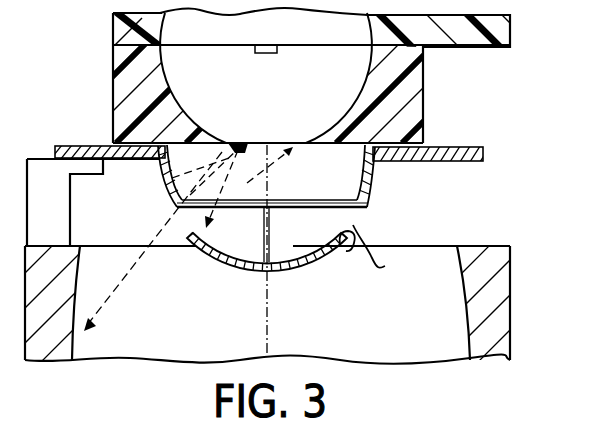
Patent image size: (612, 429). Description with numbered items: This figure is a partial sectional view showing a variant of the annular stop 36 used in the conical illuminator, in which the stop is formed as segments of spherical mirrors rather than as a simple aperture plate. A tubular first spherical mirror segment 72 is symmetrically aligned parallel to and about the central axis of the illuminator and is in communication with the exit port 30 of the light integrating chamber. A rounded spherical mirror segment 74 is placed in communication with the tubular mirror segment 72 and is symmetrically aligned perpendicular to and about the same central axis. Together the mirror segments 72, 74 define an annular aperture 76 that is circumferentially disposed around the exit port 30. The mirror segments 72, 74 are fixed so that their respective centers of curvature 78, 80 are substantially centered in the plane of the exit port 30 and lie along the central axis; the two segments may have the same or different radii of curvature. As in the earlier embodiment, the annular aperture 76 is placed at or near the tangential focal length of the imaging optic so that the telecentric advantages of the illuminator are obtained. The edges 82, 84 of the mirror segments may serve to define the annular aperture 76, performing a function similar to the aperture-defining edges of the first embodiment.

The exit port 30 is at (307, 138).
The annular stop 36 is at (306, 173).
The tubular first spherical mirror segment 72 is at (457, 187).
The rounded spherical mirror segment 74 is at (292, 272).
The annular aperture 76 is at (385, 252).
The center of curvature 78 is at (234, 148).
The center of curvature 80 is at (268, 174).
The edge 82 is at (367, 205).
The edge 84 is at (352, 249).